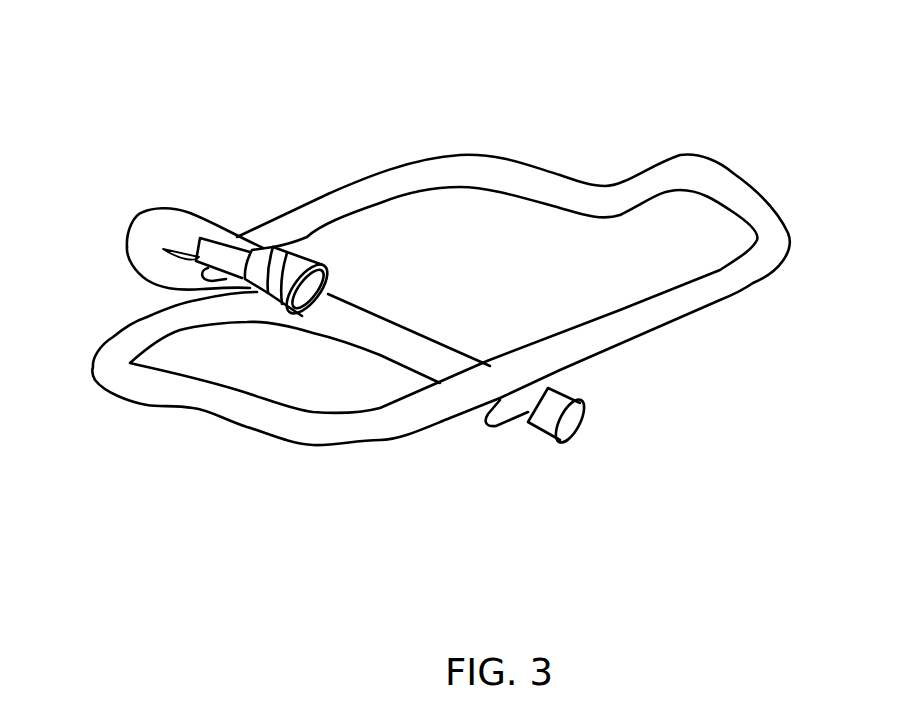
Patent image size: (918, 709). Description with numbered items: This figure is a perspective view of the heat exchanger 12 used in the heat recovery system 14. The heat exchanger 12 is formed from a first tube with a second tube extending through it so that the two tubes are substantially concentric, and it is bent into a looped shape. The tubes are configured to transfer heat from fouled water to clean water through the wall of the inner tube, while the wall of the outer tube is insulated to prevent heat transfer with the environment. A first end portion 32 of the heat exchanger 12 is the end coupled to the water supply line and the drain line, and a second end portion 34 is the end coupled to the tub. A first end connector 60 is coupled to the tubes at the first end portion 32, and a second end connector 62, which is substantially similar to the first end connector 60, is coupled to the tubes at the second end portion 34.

The heat exchanger 12 is at (652, 317).
The heat recovery system 14 is at (706, 70).
The first end portion 32 is at (597, 460).
The second end portion 34 is at (84, 255).
The first end connector 60 is at (552, 414).
The second end connector 62 is at (285, 276).